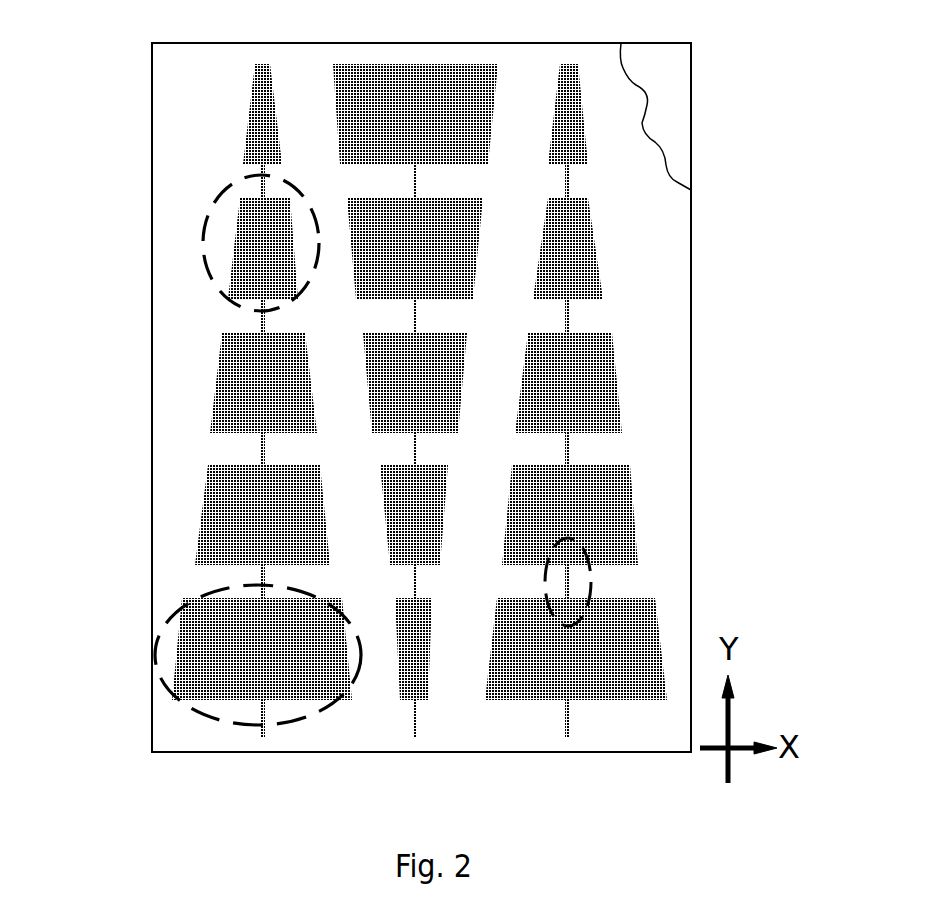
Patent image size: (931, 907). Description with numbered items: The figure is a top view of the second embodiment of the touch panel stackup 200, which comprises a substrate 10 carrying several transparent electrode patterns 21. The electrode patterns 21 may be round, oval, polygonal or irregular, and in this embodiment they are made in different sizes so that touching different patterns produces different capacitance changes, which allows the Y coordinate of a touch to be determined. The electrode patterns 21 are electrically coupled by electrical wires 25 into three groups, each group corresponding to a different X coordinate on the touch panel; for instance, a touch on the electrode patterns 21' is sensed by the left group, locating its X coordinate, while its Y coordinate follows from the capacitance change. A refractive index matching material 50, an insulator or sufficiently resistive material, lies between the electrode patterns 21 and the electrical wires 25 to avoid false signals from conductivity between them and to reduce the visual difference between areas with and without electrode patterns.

The touch panel stackup 200 is at (421, 376).
The refractive index matching material 50 is at (192, 113).
The substrate 10 is at (677, 80).
The electrode patterns 21' is at (190, 245).
The electrode patterns 21 is at (211, 656).
The electrical wires 25 is at (583, 562).